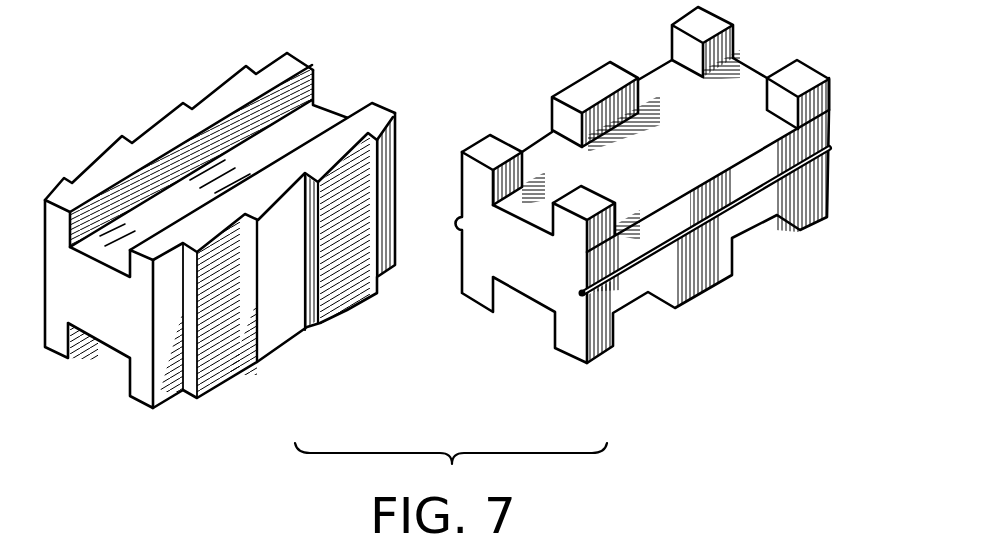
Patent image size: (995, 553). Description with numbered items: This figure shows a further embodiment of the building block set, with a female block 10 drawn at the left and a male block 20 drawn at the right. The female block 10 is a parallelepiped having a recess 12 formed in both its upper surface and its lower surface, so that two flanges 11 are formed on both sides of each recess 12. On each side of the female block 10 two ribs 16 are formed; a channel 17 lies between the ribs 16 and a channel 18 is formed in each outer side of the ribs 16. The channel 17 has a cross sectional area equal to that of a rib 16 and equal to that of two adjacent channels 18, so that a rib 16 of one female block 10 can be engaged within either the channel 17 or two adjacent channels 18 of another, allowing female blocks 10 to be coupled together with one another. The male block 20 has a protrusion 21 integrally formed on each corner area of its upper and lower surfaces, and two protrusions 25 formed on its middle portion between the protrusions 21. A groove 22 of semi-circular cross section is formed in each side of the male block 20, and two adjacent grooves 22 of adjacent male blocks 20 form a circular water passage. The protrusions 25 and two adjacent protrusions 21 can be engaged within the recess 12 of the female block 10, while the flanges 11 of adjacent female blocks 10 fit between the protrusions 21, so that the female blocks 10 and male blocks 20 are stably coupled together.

The female block 10 is at (341, 106).
The flanges 11 is at (68, 186).
The recess 12 is at (223, 147).
The ribs 16 is at (257, 363).
The channel 17 is at (323, 324).
The channel 18 is at (387, 137).
The male block 20 is at (756, 56).
The protrusion 21 is at (808, 77).
The groove 22 is at (827, 147).
The protrusions 25 is at (582, 90).